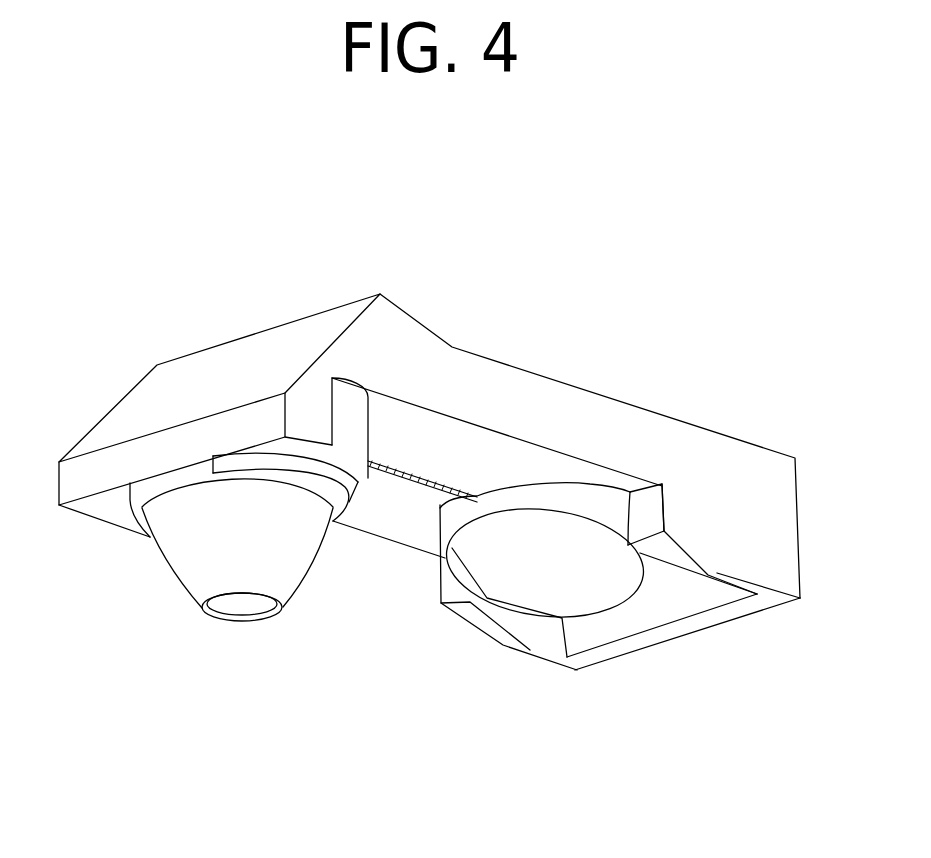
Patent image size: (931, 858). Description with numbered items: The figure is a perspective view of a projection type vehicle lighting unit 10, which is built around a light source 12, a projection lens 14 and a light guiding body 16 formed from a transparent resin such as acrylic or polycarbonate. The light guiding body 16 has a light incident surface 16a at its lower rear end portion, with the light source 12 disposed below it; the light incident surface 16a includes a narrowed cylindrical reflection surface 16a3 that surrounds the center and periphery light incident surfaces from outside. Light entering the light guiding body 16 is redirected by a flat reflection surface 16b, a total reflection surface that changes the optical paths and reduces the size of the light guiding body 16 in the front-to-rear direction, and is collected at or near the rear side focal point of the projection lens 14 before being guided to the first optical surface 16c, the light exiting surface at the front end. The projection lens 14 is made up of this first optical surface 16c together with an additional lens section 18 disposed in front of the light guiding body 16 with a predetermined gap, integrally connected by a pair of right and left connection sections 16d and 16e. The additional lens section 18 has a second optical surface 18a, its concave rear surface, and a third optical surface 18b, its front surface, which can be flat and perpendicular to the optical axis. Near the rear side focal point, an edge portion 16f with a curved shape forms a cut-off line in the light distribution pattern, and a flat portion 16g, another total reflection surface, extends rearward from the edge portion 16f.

The vehicle lighting unit 10 is at (517, 249).
The light source 12 is at (233, 613).
The projection lens 14 is at (764, 686).
The light guiding body 16 is at (582, 398).
The light incident surface 16a is at (262, 608).
The narrowed cylindrical reflection surface 16a3 is at (173, 557).
The flat reflection surface 16b is at (242, 358).
The first optical surface 16c is at (644, 552).
The connection section 16d is at (530, 652).
The connection section 16e is at (742, 512).
The edge portion 16f is at (513, 490).
The flat portion 16g is at (442, 504).
The additional lens section 18 is at (691, 622).
The second optical surface 18a is at (673, 600).
The third optical surface 18b is at (723, 623).